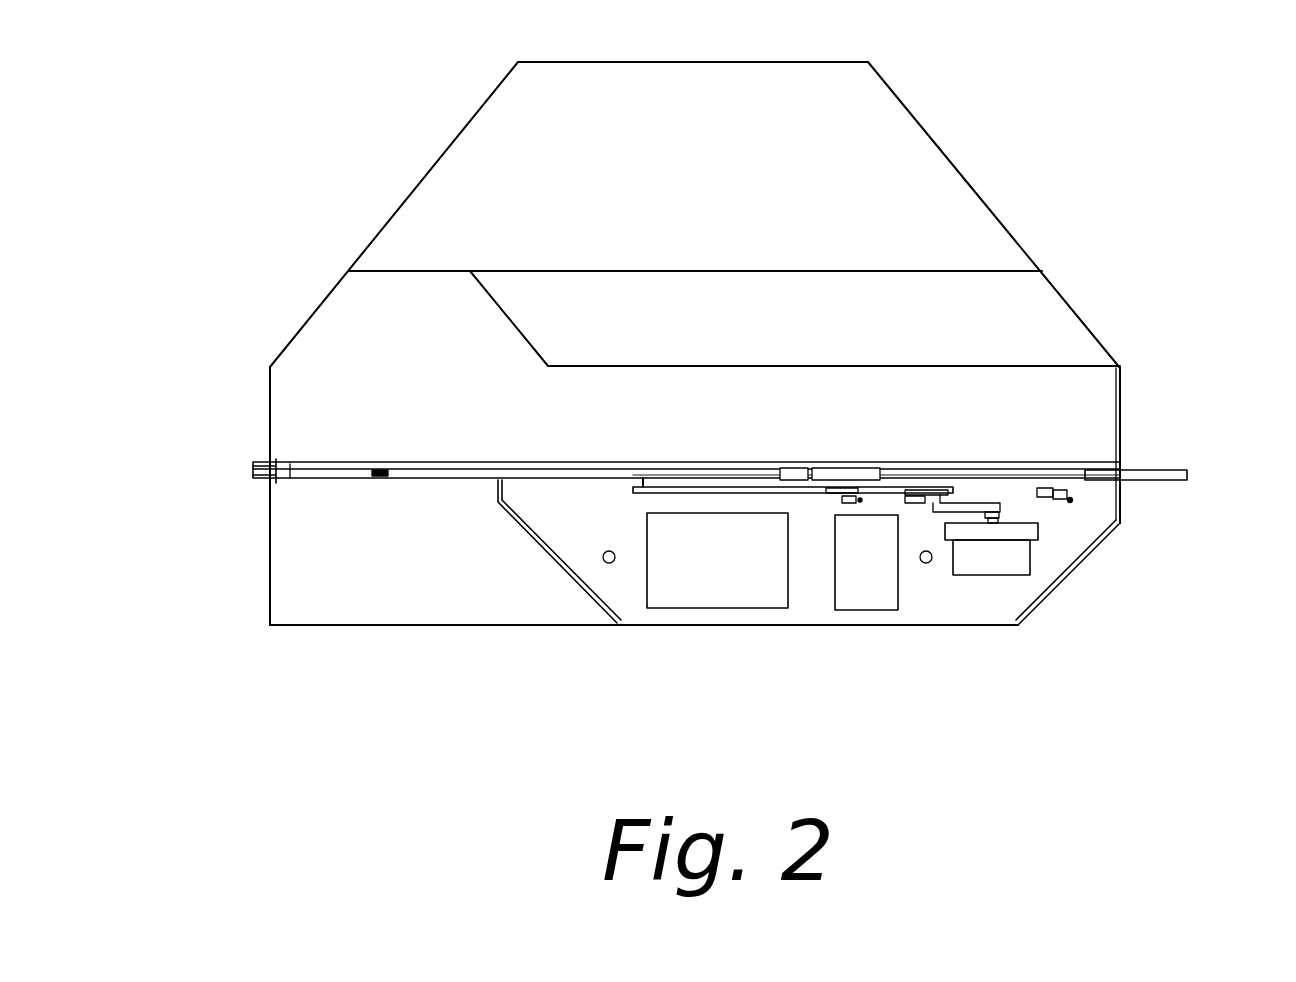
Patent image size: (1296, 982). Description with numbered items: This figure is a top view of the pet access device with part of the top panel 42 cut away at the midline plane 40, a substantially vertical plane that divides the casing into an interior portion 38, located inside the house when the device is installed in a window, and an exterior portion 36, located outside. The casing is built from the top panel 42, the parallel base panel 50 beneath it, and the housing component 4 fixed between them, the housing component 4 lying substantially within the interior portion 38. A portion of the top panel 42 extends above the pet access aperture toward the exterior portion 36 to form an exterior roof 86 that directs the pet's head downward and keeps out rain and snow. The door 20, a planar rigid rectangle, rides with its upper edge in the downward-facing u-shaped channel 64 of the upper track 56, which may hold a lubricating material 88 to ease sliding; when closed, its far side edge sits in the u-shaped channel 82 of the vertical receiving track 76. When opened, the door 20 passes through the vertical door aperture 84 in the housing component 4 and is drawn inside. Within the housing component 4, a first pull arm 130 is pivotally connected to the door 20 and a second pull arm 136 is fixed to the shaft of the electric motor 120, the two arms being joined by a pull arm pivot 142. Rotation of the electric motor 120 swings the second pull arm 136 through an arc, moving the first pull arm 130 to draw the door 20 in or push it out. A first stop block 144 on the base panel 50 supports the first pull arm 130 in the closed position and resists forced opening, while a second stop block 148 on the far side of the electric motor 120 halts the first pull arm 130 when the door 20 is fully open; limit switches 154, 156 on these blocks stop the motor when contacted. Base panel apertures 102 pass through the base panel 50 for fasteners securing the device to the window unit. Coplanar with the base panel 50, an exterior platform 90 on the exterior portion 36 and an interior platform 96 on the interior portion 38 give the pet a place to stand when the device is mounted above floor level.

The exterior portion 36 is at (400, 165).
The exterior platform 90 is at (920, 157).
The base panel 50 is at (1062, 296).
The top panel 42 is at (1123, 422).
The exterior roof 86 is at (395, 368).
The interior portion 38 is at (410, 650).
The interior platform 96 is at (330, 605).
The housing component 4 is at (1052, 597).
The base panel apertures 102 is at (607, 563).
The electric motor 120 is at (1040, 553).
The midline plane 40 is at (232, 471).
The door 20 is at (360, 481).
The receiving track 76 is at (275, 462).
The u-shaped channel 82 is at (277, 481).
The upper track 56 is at (335, 462).
The lubricating material 88 is at (320, 462).
The u-shaped channel 64 is at (313, 481).
The vertical door aperture 84 is at (500, 462).
The second stop block 148 is at (1120, 488).
The first pull arm 130 is at (745, 495).
The first stop block 144 is at (848, 503).
The limit switch 154 is at (817, 508).
The pull arm pivot 142 is at (915, 497).
The second pull arm 136 is at (990, 522).
The limit switch 156 is at (1063, 503).